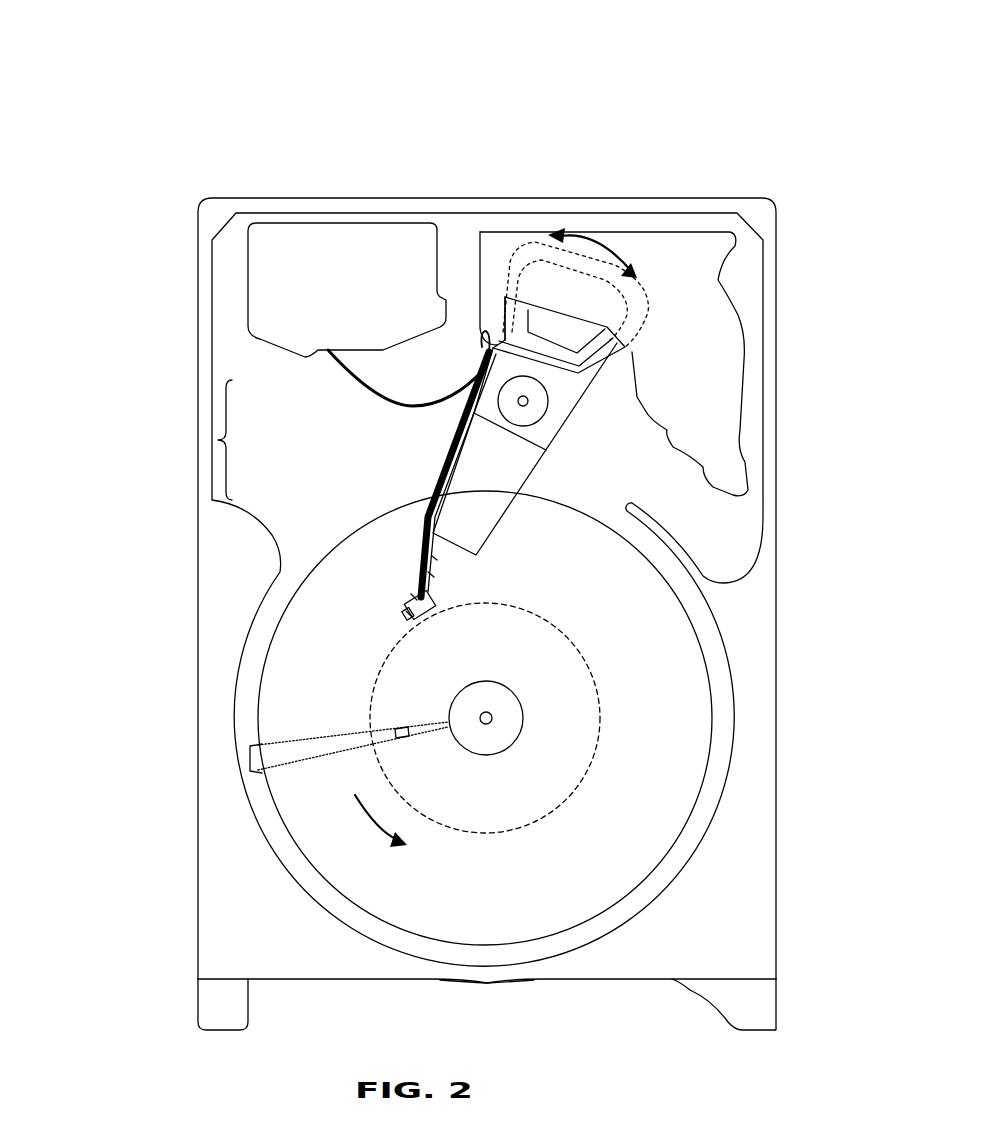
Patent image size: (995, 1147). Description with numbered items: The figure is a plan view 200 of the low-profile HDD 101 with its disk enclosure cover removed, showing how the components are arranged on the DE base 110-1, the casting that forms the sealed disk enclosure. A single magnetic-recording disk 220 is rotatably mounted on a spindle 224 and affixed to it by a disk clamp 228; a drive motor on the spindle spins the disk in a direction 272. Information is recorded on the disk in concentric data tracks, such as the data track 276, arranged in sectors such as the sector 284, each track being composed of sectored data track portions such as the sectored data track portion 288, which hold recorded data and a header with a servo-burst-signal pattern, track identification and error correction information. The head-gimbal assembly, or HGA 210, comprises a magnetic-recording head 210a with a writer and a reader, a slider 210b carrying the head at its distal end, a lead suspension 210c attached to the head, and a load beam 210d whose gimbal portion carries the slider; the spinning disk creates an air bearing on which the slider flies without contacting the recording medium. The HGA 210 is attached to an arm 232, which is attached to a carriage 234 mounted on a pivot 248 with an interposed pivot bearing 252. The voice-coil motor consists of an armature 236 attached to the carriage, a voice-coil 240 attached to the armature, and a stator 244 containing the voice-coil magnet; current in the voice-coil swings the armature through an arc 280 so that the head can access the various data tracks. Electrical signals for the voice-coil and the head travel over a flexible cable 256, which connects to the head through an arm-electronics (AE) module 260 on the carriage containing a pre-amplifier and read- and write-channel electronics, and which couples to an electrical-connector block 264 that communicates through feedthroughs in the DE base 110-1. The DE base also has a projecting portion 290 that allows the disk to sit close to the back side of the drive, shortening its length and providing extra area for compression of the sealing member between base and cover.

The plan view 200 is at (106, 73).
The low-profile HDD 101 is at (264, 180).
The DE base 110-1 is at (760, 214).
The electrical-connector block 264 is at (270, 292).
The flexible cable 256 is at (352, 380).
The stator 244 is at (713, 312).
The voice-coil 240 is at (517, 307).
The armature 236 is at (505, 295).
The actuator rotation direction 280 is at (598, 244).
The arm 232 is at (478, 503).
The carriage 234 is at (540, 428).
The pivot bearing 252 is at (537, 411).
The pivot 248 is at (528, 401).
The arm-electronics (AE) module 260 is at (478, 374).
The HGA 210 is at (218, 440).
The magnetic-recording head 210a is at (409, 614).
The slider 210b is at (413, 597).
The lead suspension 210c is at (431, 574).
The load beam 210d is at (433, 558).
The magnetic-recording disk 220 is at (652, 672).
The data track 276 is at (585, 648).
The spindle 224 is at (493, 718).
The disk clamp 228 is at (507, 733).
The sector 284 is at (248, 758).
The sectored data track portion 288 is at (398, 733).
The direction 272 is at (359, 830).
The projecting portion 290 is at (488, 985).